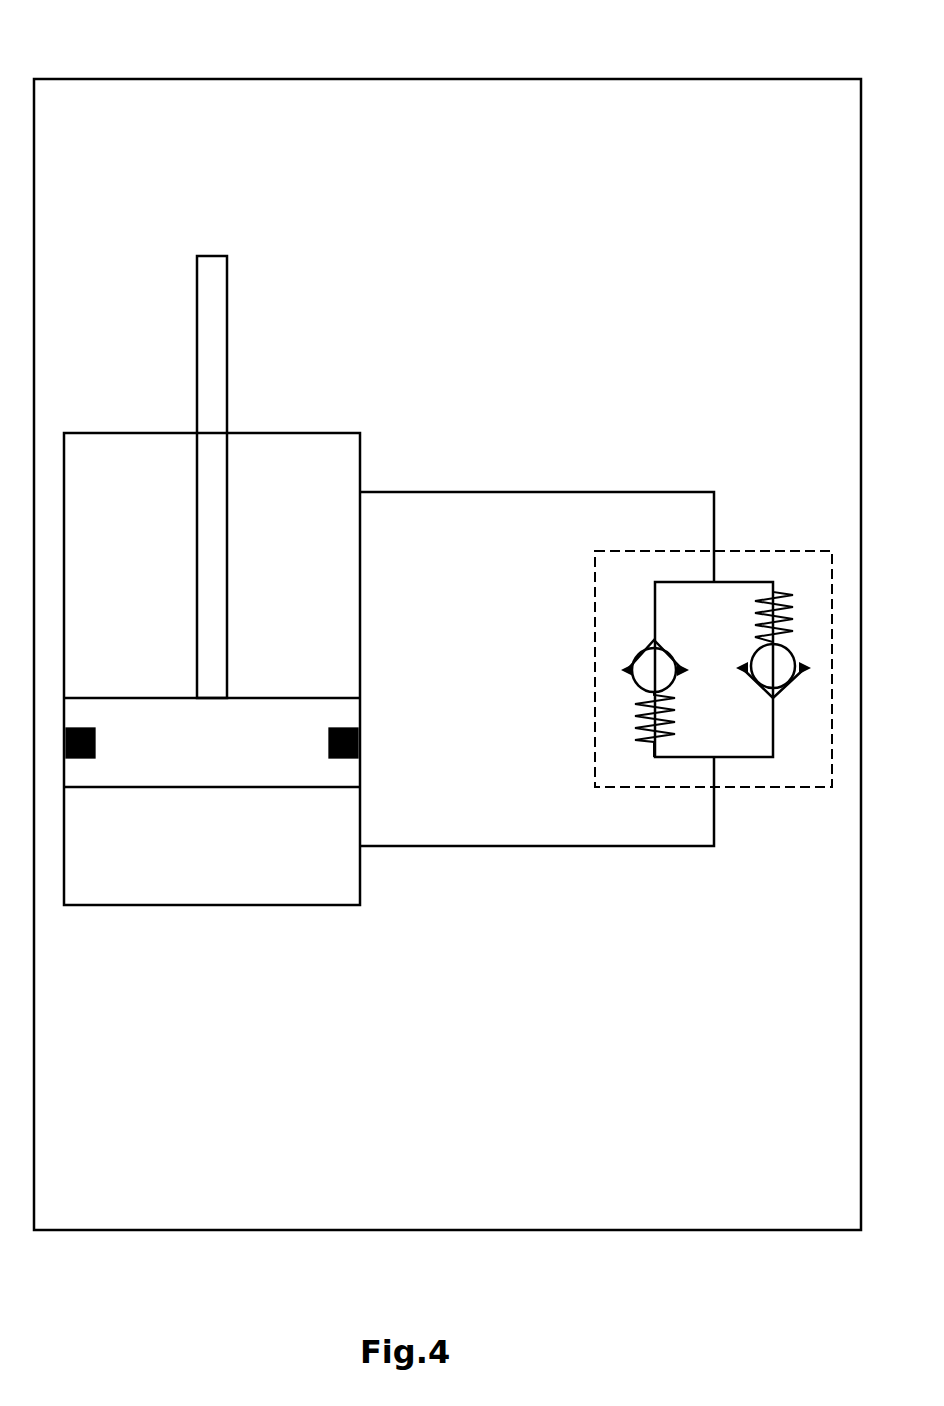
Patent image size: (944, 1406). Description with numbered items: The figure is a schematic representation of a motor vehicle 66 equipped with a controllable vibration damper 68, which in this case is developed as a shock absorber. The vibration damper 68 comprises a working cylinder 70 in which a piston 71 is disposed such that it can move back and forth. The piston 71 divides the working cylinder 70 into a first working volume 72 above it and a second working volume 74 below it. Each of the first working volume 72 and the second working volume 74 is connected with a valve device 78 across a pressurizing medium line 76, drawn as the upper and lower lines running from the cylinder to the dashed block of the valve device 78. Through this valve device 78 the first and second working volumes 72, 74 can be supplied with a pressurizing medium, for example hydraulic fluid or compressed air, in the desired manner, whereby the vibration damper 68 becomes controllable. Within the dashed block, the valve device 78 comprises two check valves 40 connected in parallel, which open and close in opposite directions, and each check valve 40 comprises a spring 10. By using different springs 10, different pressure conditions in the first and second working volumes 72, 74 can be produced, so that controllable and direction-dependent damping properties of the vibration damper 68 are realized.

The motor vehicle 66 is at (715, 79).
The vibration damper 68 is at (136, 313).
The working cylinder 70 is at (312, 433).
The piston 71 is at (258, 788).
The first working volume 72 is at (113, 560).
The second working volume 74 is at (113, 847).
The pressurizing medium line 76 is at (522, 492).
The valve device 78 is at (595, 615).
The spring 10 is at (760, 605).
The check valve 40 is at (788, 573).